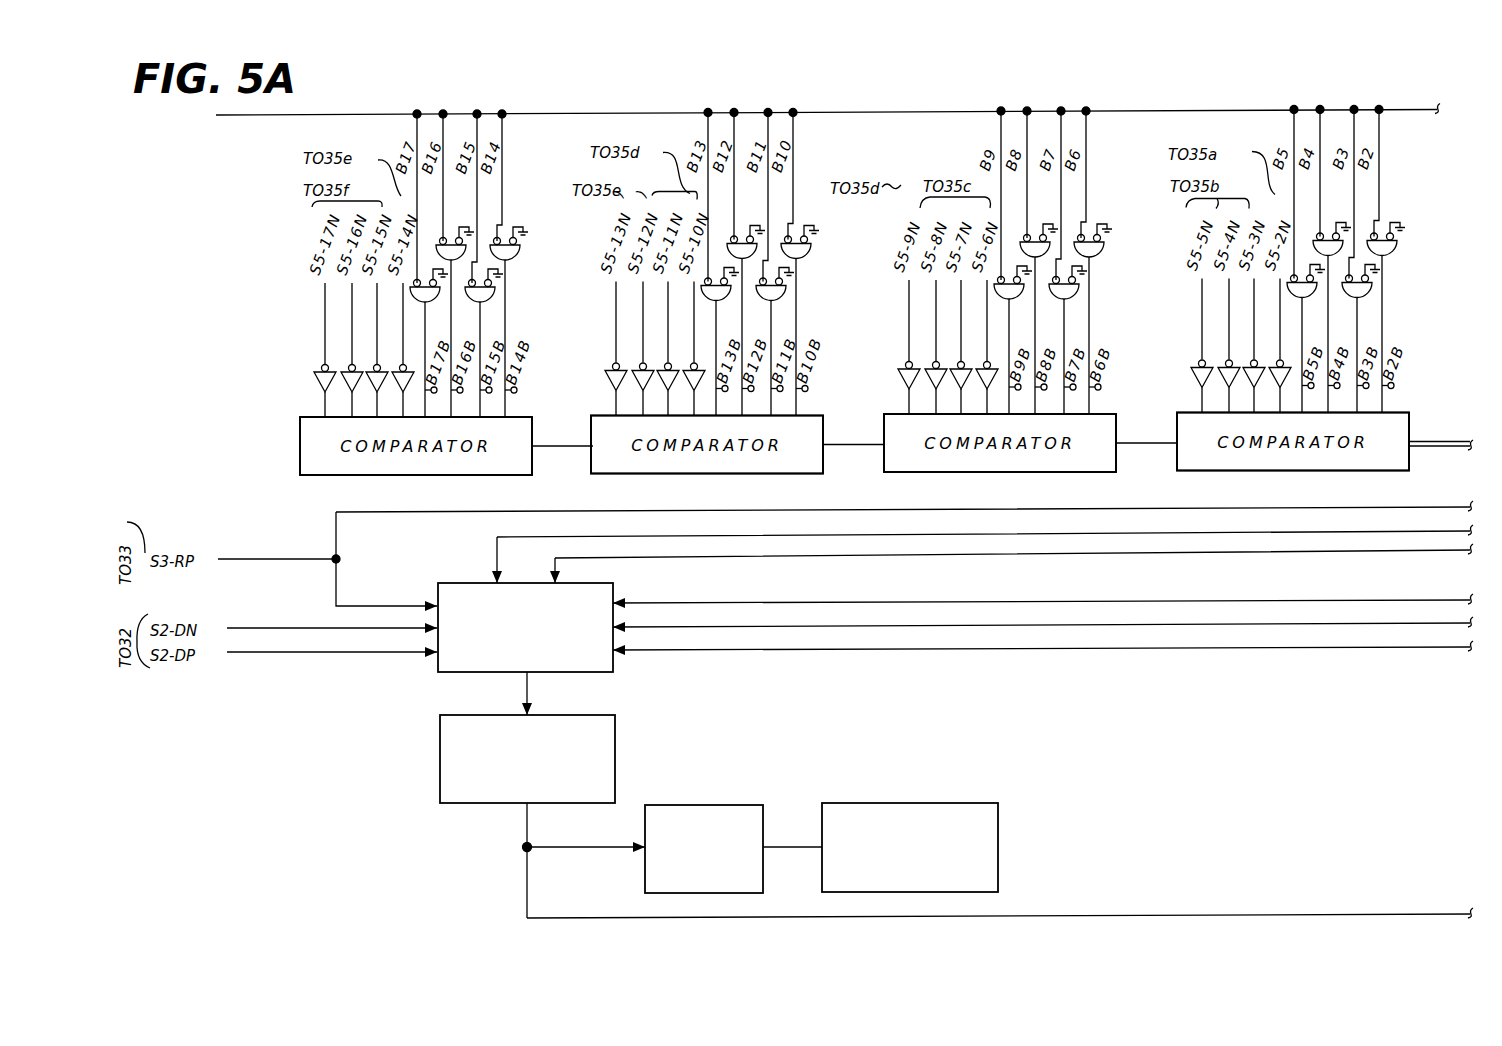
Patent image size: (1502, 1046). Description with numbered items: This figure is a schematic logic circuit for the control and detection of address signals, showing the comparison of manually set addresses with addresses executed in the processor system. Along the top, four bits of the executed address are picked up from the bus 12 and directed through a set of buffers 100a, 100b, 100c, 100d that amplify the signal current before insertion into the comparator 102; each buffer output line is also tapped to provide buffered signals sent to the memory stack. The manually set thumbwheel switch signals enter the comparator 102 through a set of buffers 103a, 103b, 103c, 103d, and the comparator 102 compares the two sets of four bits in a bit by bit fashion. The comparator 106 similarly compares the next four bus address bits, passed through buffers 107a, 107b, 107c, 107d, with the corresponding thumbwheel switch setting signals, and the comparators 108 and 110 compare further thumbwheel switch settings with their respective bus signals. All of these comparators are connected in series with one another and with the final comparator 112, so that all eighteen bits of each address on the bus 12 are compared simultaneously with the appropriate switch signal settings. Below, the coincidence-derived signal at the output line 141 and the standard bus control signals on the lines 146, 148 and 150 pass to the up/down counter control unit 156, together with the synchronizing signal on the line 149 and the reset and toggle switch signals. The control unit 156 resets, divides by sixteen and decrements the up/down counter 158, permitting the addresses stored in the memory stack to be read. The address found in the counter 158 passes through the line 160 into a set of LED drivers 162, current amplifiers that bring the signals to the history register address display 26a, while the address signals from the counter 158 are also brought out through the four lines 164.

The bus 12 is at (862, 112).
The buffer 100a is at (512, 258).
The buffer 100b is at (492, 297).
The buffer 100c is at (453, 240).
The buffer 100d is at (433, 302).
The comparator 102 is at (423, 468).
The buffer 103a is at (402, 390).
The buffer 103b is at (377, 364).
The buffer 103c is at (352, 364).
The buffer 103d is at (313, 378).
The comparator 106 is at (707, 460).
The buffer 107a is at (821, 257).
The buffer 107b is at (812, 297).
The buffer 107c is at (789, 204).
The buffer 107d is at (783, 311).
The comparator 108 is at (1000, 459).
The comparator 110 is at (1293, 457).
The final comparator 112 is at (1441, 425).
The output line 141 is at (1290, 531).
The line 146 is at (1190, 648).
The line 148 is at (1260, 624).
The line 149 is at (866, 553).
The line 150 is at (1310, 600).
The up/down counter control unit 156 is at (605, 662).
The up/down counter 158 is at (478, 790).
The line 160 is at (527, 822).
The LED drivers 162 is at (732, 805).
The lines 164 is at (700, 918).
The history register address display 26a is at (915, 803).